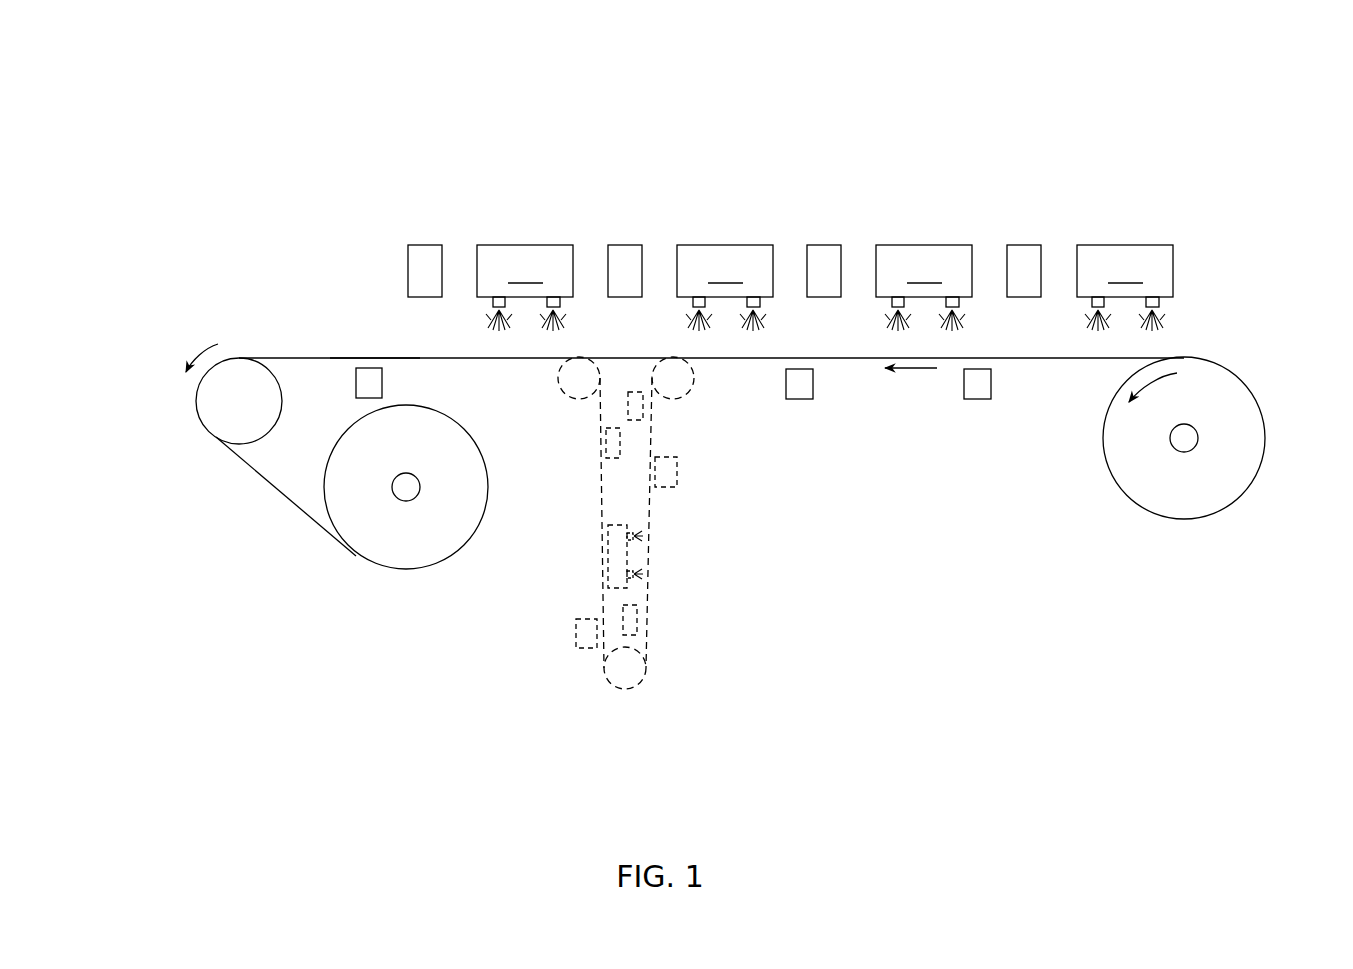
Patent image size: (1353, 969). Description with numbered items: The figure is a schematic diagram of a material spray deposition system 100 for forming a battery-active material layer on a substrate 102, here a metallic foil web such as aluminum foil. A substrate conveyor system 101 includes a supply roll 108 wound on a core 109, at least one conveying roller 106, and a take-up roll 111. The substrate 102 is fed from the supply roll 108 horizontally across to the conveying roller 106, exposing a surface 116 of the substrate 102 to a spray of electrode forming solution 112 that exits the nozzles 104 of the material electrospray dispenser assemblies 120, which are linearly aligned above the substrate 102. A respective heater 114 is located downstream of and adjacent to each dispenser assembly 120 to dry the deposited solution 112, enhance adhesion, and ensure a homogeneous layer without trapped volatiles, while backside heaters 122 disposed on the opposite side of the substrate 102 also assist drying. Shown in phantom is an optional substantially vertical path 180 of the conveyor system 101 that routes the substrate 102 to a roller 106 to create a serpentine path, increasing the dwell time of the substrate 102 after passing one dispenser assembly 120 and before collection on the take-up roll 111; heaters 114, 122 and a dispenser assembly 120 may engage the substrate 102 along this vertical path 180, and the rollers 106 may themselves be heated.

The material spray deposition system 100 is at (1022, 156).
The substrate conveyor system 101 is at (820, 430).
The substrate 102 is at (320, 356).
The nozzles 104 is at (488, 307).
The conveying roller 106 is at (196, 402).
The supply roll 108 is at (1235, 350).
The core 109 is at (1198, 434).
The take-up roll 111 is at (418, 570).
The electrode forming solution 112 is at (480, 333).
The heater 114 is at (425, 242).
The surface 116 is at (376, 357).
The material electrospray dispenser assembly 120 is at (608, 555).
The backside heater 122 is at (386, 379).
The substantially vertical path 180 is at (660, 437).